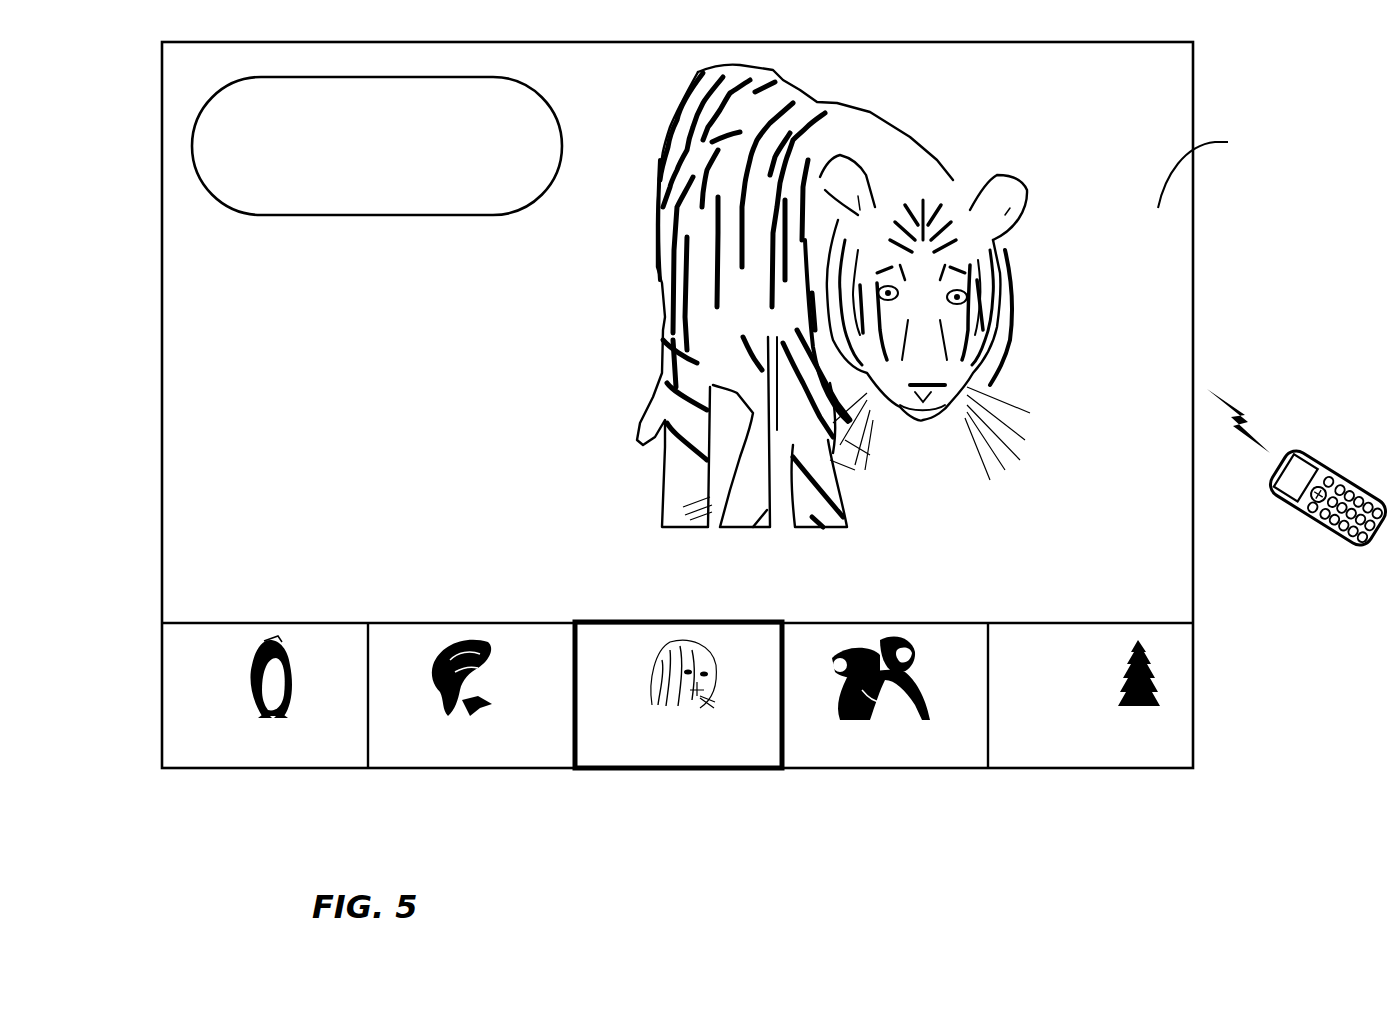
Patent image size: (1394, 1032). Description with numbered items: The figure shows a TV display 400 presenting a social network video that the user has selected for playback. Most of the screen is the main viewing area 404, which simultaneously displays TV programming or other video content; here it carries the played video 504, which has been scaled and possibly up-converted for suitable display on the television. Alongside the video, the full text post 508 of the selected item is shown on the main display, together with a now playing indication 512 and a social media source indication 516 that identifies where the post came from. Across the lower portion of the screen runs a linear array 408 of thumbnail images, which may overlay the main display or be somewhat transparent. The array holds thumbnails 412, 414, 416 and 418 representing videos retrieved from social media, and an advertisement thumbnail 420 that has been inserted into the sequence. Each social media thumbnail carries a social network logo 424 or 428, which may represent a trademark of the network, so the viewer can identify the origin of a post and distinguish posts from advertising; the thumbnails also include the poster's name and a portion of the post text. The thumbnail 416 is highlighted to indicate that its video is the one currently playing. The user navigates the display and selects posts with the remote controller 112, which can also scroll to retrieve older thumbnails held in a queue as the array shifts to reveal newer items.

The remote controller 112 is at (1344, 470).
The TV display 400 is at (1193, 332).
The main viewing area 404 is at (1213, 169).
The linear array of thumbnail images 408 is at (1210, 697).
The thumbnail 412 is at (355, 727).
The thumbnail 414 is at (563, 727).
The thumbnail 416 is at (757, 723).
The thumbnail 418 is at (1177, 725).
The advertisement thumbnail 420 is at (967, 728).
The social network logo 424 is at (181, 768).
The social network logo 428 is at (392, 768).
The played video 504 is at (560, 445).
The full text post 508 is at (545, 192).
The now playing indication 512 is at (298, 243).
The social media source indication 516 is at (275, 92).